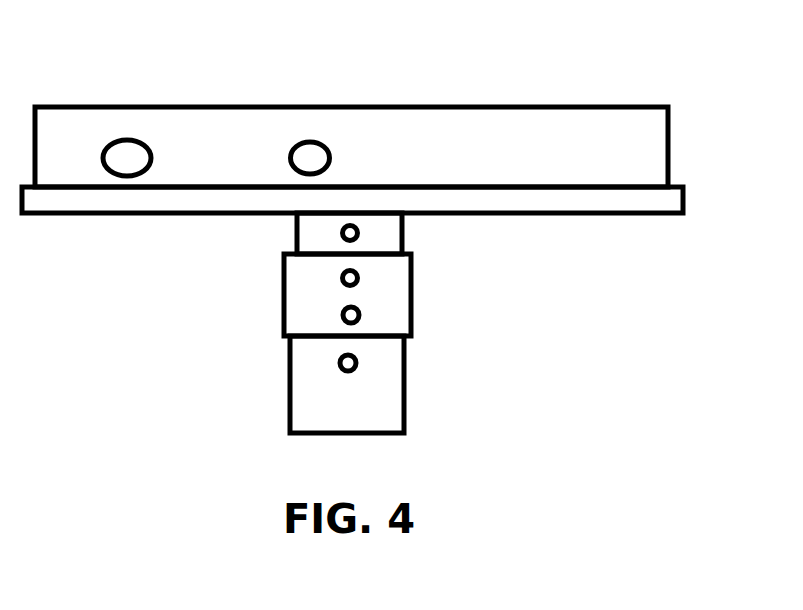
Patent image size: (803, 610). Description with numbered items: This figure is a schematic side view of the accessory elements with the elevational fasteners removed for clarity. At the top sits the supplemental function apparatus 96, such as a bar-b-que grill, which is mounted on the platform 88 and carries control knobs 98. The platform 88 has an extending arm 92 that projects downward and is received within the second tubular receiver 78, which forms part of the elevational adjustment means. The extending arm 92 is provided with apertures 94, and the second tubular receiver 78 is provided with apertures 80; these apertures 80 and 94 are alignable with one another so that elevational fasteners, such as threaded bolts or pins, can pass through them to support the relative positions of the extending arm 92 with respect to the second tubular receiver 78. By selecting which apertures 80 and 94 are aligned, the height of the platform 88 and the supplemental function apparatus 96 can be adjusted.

The supplemental function apparatus 96 is at (445, 137).
The platform 88 is at (598, 202).
The control knobs 98 is at (127, 155).
The second tubular receiver 78 is at (393, 290).
The extending arm 92 is at (382, 372).
The apertures 94 is at (342, 233).
The apertures 80 is at (342, 278).